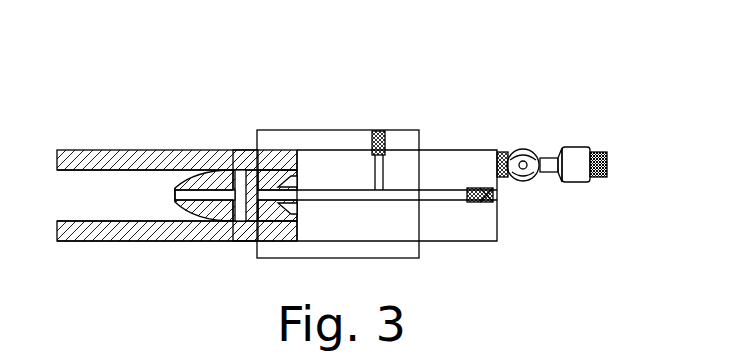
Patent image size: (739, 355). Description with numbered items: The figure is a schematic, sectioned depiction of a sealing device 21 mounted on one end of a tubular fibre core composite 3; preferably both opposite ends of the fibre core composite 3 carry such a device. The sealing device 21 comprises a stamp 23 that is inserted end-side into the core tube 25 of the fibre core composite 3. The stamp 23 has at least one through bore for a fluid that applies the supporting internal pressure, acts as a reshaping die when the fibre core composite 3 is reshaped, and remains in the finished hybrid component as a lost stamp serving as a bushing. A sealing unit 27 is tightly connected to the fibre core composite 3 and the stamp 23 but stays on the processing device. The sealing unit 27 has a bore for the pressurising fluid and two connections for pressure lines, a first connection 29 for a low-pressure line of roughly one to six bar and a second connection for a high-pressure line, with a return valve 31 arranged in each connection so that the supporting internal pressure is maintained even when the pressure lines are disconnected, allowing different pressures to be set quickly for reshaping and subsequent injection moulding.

The fibre core composite 3 is at (103, 150).
The sealing device 21 is at (415, 95).
The stamp 23 is at (222, 168).
The core tube 25 is at (147, 230).
The sealing unit 27 is at (440, 140).
The first connection 29 is at (430, 203).
The return valve 31 is at (477, 203).